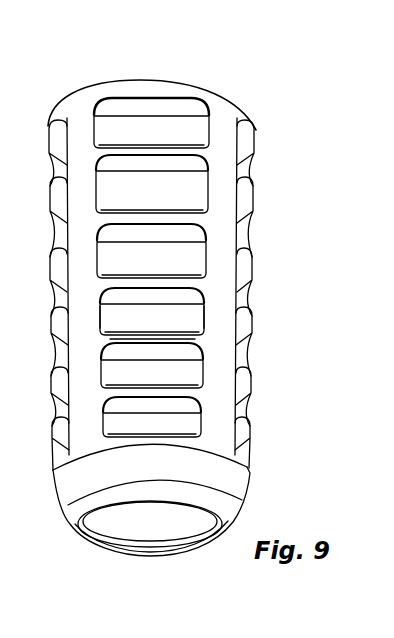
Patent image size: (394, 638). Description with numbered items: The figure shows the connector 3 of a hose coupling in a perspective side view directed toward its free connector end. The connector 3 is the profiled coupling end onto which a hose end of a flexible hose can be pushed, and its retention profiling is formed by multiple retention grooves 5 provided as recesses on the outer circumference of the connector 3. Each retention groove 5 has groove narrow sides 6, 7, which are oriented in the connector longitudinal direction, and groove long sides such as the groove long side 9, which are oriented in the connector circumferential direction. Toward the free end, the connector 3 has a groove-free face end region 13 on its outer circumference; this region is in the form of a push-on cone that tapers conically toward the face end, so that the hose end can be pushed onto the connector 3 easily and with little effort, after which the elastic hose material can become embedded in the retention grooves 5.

The connector 3 is at (274, 271).
The retention groove 5 is at (50, 224).
The groove narrow side 6 is at (108, 316).
The groove narrow side 7 is at (192, 316).
The groove long side 9 is at (130, 330).
The groove-free face end region 13 is at (157, 476).